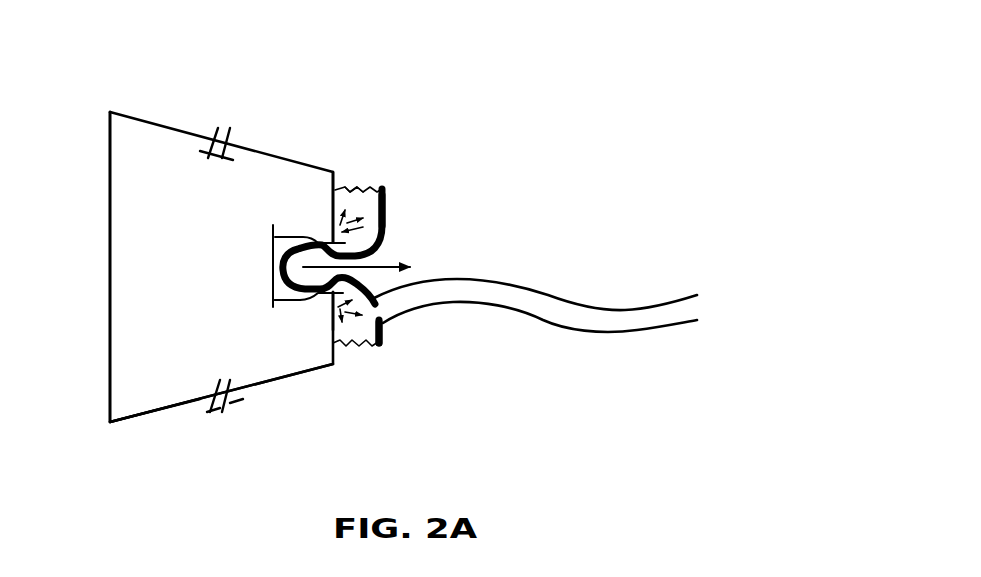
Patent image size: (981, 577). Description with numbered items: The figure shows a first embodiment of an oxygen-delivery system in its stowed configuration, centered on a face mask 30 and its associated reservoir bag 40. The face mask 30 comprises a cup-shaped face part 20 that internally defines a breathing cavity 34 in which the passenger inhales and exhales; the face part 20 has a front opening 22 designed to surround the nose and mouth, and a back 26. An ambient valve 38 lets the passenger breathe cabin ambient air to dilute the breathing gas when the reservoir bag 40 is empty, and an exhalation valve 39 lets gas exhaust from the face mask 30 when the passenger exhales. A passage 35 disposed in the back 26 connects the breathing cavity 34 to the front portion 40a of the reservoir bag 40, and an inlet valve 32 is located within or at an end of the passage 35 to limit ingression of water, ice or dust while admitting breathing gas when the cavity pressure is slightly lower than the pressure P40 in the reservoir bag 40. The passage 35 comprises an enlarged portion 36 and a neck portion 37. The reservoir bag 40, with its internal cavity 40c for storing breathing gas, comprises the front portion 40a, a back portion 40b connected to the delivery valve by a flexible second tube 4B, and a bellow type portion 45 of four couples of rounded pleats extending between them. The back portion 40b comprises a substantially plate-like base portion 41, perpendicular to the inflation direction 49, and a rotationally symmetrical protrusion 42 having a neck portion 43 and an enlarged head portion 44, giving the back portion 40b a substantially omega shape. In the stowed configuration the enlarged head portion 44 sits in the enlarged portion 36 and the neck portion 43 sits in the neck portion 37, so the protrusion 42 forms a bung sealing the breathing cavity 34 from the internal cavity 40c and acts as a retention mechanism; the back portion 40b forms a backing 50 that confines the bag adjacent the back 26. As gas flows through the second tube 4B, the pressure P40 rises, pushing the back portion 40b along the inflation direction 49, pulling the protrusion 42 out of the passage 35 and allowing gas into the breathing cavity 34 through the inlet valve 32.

The face mask 30 is at (113, 454).
The front opening 22 is at (108, 370).
The face part 20 is at (168, 410).
The breathing cavity 34 is at (150, 388).
The exhalation valve 39 is at (230, 402).
The ambient valve 38 is at (196, 164).
The back 26 is at (335, 187).
The inlet valve 32 is at (272, 228).
The passage 35 is at (250, 43).
The enlarged portion 36 is at (293, 235).
The neck portion 37 is at (328, 236).
The reservoir bag 40 is at (380, 178).
The front portion 40a is at (336, 186).
The back portion 40b is at (391, 192).
The backing 50 is at (422, 226).
The bellow type portion 45 is at (358, 188).
The internal cavity 40c is at (350, 326).
The base portion 41 is at (388, 215).
The pressure in the reservoir bag P40 is at (365, 227).
The inflation direction 49 is at (387, 270).
The protrusion 42 is at (308, 430).
The neck portion 43 is at (333, 292).
The enlarged head portion 44 is at (305, 299).
The second tube 4B is at (592, 308).